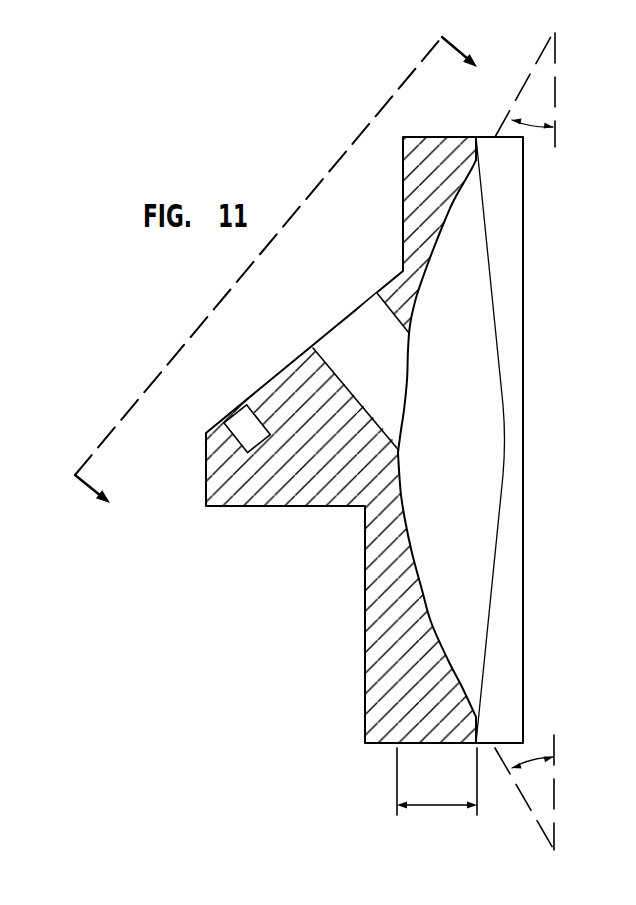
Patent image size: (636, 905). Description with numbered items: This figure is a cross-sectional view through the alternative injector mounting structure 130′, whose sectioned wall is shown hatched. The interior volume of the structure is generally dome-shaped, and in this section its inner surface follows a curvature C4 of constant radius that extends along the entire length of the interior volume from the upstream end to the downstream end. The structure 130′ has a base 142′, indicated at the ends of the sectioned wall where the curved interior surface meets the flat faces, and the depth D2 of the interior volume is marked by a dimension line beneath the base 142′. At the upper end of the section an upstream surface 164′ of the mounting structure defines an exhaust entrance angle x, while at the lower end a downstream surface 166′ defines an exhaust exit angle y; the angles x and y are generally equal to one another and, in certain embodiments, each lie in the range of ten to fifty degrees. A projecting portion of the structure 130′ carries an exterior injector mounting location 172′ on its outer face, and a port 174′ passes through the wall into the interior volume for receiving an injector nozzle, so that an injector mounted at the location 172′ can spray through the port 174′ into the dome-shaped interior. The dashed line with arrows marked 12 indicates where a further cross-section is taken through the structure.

The injector mounting structure 130′ is at (352, 709).
The base 142′ is at (476, 148).
The upstream surface 164′ is at (448, 220).
The downstream surface 166′ is at (432, 622).
The curvature C4 is at (420, 290).
The port 174′ is at (390, 302).
The exterior injector mounting location 172′ is at (246, 396).
The section line for FIG. 12 is at (294, 284).
The exhaust entrance angle x is at (525, 90).
The exhaust exit angle y is at (524, 792).
The depth D2 is at (437, 787).